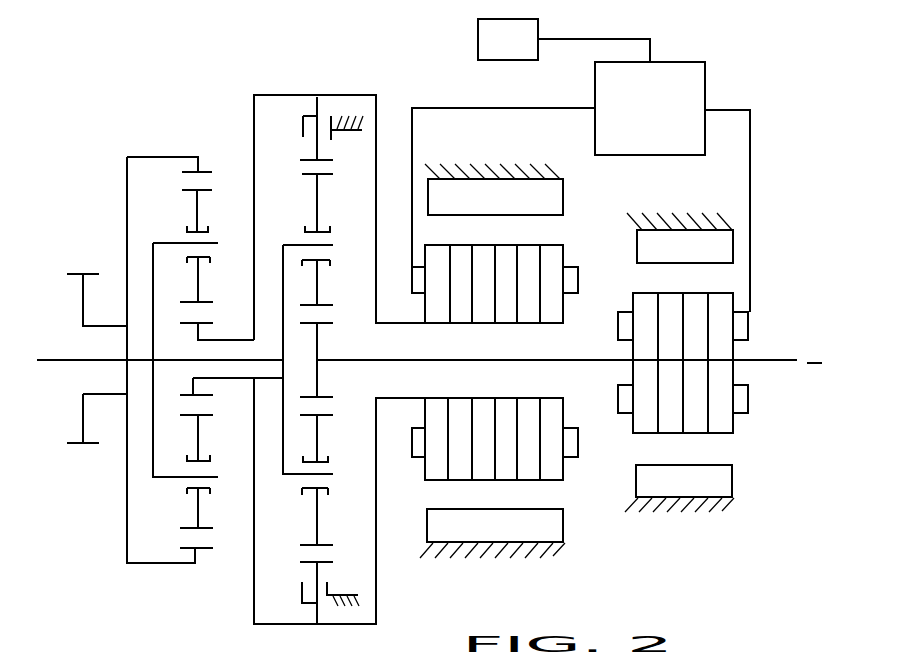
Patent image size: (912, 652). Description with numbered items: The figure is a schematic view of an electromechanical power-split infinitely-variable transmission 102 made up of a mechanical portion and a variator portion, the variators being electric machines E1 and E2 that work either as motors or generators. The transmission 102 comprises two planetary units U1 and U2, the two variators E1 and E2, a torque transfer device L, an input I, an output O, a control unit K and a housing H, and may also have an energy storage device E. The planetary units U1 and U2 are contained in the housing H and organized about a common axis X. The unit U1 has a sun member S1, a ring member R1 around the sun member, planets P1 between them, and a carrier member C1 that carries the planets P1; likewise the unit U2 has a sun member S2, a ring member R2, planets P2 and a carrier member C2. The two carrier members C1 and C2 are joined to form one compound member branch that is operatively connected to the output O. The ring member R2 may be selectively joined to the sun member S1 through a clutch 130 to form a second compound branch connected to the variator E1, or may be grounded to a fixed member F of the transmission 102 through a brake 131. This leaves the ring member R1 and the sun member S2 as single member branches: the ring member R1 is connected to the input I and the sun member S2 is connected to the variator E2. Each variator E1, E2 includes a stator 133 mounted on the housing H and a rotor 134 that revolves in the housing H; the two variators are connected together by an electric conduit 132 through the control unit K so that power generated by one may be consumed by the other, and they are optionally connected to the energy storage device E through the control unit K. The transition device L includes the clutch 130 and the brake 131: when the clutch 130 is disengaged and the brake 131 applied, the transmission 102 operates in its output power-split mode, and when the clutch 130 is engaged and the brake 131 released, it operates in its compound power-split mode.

The transmission 102 is at (422, 31).
The clutch 130 is at (303, 118).
The brake 131 is at (362, 130).
The electric conduit 132 is at (486, 110).
The stator 133 is at (548, 190).
The rotor 134 is at (548, 310).
The torque transfer device L is at (325, 112).
The fixed member F is at (338, 127).
The input I is at (82, 313).
The output O is at (77, 363).
The common axis X is at (812, 379).
The ring member R1 is at (205, 170).
The planets P1 is at (196, 214).
The sun member S1 is at (200, 332).
The carrier member C1 is at (152, 446).
The ring member R2 is at (312, 156).
The planets P2 is at (318, 213).
The sun member S2 is at (318, 341).
The carrier member C2 is at (283, 378).
The first planetary unit U1 is at (147, 573).
The second planetary unit U2 is at (246, 614).
The electric machine variator E1 is at (553, 488).
The electric machine variator E2 is at (735, 448).
The energy storage device E is at (515, 59).
The control unit K is at (659, 120).
The housing H is at (352, 600).